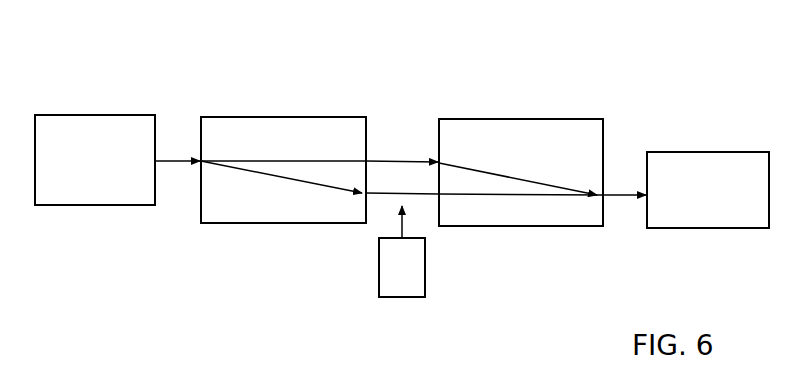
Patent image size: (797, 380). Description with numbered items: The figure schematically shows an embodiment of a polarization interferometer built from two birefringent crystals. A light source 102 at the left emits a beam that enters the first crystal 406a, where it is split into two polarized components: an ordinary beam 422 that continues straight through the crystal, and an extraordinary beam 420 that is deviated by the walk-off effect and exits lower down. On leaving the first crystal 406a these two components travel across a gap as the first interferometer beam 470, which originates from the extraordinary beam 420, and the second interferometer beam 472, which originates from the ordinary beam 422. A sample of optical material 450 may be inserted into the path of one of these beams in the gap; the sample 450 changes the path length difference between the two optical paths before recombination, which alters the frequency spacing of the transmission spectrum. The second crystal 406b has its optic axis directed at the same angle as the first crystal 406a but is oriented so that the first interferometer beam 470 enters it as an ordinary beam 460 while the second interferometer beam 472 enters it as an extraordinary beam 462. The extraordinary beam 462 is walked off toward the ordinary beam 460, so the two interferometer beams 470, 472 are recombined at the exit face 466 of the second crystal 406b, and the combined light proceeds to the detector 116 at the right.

The light source 102 is at (80, 205).
The detector 116 is at (694, 148).
The first crystal 406a is at (258, 115).
The second crystal 406b is at (507, 118).
The extraordinary beam 420 is at (318, 185).
The ordinary beam 422 is at (305, 160).
The sample of optical material 450 is at (400, 297).
The ordinary beam 460 is at (503, 195).
The extraordinary beam 462 is at (465, 168).
The exit face 466 is at (603, 135).
The first interferometer beam 470 is at (378, 197).
The second interferometer beam 472 is at (397, 157).